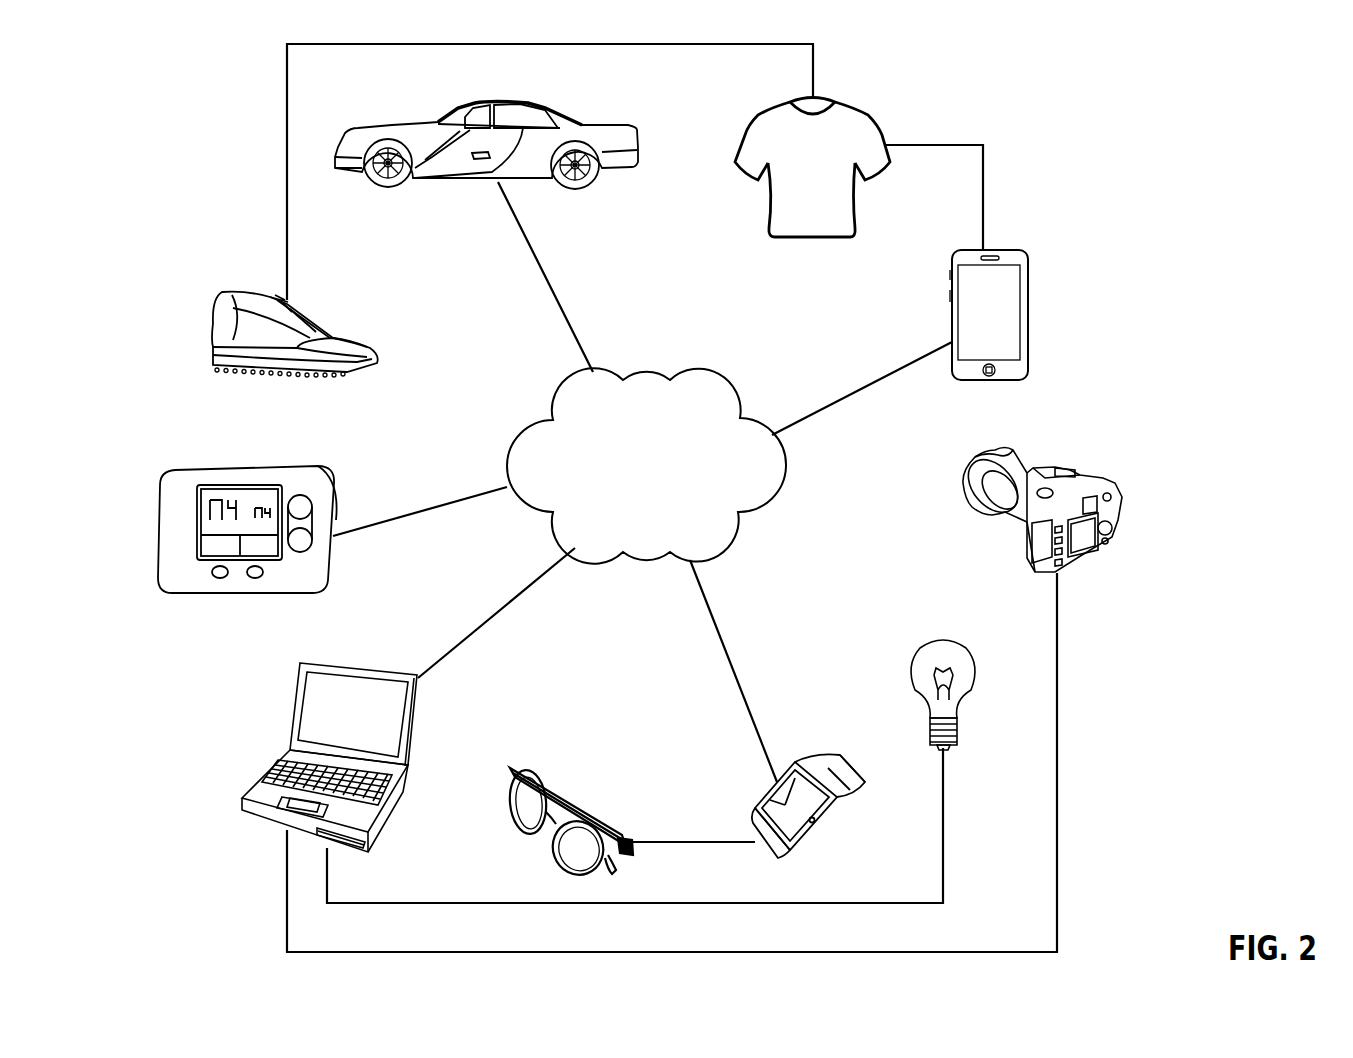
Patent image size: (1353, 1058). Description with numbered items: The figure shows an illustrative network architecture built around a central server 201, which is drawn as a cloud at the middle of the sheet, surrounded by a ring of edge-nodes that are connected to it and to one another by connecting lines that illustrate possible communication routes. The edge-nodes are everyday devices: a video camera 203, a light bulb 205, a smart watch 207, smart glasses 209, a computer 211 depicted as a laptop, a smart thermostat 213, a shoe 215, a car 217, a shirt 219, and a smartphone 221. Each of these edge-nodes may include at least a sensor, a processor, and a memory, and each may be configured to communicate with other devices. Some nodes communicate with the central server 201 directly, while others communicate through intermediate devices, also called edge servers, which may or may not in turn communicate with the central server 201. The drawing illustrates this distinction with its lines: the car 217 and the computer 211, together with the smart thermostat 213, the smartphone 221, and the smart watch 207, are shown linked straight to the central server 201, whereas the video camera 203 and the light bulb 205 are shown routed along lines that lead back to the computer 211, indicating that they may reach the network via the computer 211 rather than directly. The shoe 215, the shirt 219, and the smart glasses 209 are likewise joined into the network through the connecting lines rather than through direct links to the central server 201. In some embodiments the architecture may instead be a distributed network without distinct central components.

The central server 201 is at (648, 372).
The video camera 203 is at (1068, 470).
The light bulb 205 is at (947, 642).
The smart watch 207 is at (828, 757).
The smart glasses 209 is at (560, 792).
The computer 211 is at (347, 662).
The smart thermostat 213 is at (229, 465).
The shoe 215 is at (223, 290).
The car 217 is at (520, 103).
The shirt 219 is at (853, 112).
The smartphone 221 is at (1005, 250).